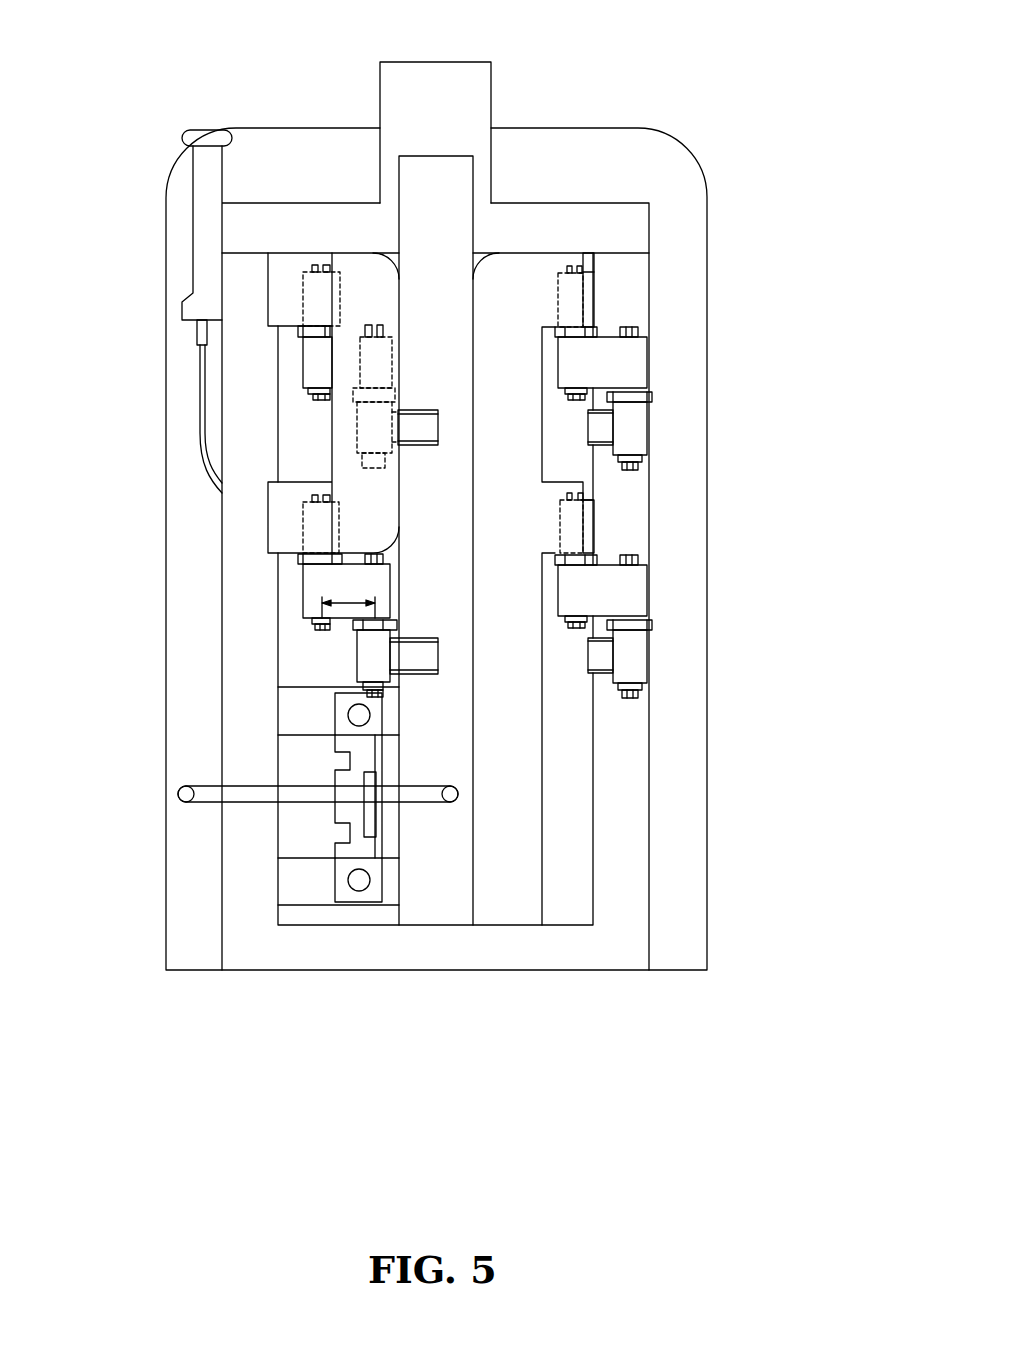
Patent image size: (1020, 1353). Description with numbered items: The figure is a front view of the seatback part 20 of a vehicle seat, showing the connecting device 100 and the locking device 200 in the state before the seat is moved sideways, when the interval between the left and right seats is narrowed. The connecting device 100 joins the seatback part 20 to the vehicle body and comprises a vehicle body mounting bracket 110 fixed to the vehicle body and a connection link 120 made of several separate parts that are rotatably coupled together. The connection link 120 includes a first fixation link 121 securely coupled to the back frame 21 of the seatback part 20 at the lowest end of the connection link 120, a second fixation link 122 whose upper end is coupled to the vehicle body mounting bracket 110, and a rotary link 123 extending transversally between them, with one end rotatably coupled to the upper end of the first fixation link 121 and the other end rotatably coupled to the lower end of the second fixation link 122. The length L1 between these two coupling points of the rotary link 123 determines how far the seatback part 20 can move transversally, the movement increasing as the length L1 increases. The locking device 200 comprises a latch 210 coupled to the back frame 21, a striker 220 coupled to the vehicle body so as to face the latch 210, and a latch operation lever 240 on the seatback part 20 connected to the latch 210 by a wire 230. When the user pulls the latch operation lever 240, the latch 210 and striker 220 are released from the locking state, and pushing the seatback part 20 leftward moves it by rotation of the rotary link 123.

The seatback part 20 is at (298, 150).
The back frame 21 is at (555, 223).
The connecting device 100 is at (441, 480).
The vehicle body mounting bracket 110 is at (338, 435).
The connection link 120 is at (293, 348).
The first fixation link 121 is at (632, 432).
The second fixation link 122 is at (588, 297).
The rotary link 123 is at (617, 370).
The locking device 200 is at (243, 891).
The latch 210 is at (372, 817).
The striker 220 is at (243, 793).
The wire 230 is at (200, 390).
The latch operation lever 240 is at (180, 134).
The length L1 is at (343, 605).